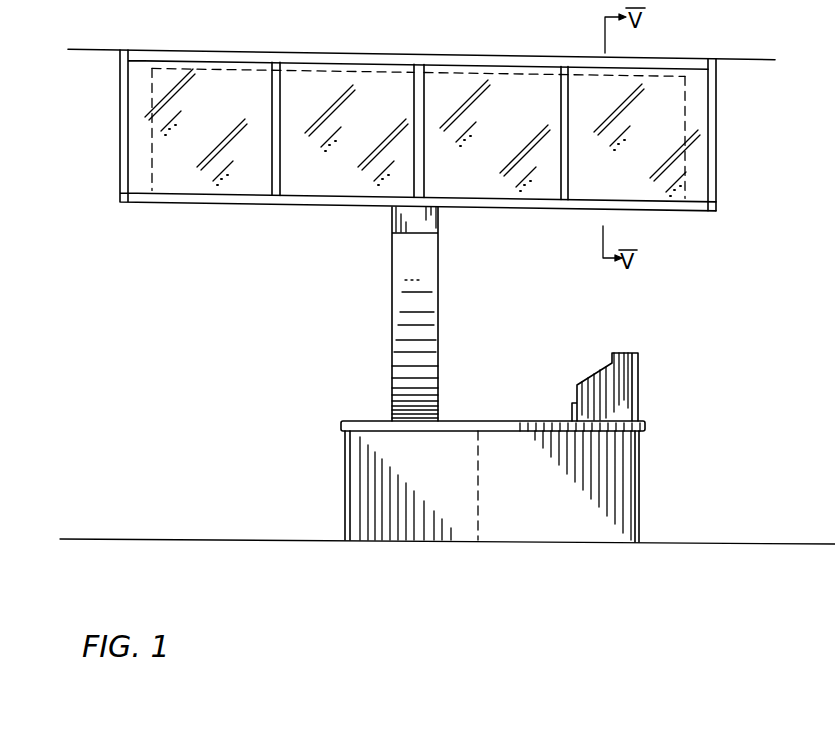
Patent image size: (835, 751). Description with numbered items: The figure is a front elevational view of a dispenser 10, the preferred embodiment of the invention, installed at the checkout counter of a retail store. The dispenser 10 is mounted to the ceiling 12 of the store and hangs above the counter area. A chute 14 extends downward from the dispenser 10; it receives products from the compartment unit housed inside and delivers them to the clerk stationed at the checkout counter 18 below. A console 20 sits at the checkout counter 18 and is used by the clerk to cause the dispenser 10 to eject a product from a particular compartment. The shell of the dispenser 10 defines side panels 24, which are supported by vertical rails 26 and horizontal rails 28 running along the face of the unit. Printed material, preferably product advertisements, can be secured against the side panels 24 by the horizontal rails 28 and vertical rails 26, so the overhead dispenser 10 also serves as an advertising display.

The dispenser 10 is at (163, 218).
The ceiling 12 is at (740, 62).
The chute 14 is at (392, 310).
The checkout counter 18 is at (360, 472).
The console 20 is at (628, 402).
The side panels 24 is at (202, 82).
The vertical rails 26 is at (118, 176).
The horizontal rails 28 is at (500, 53).